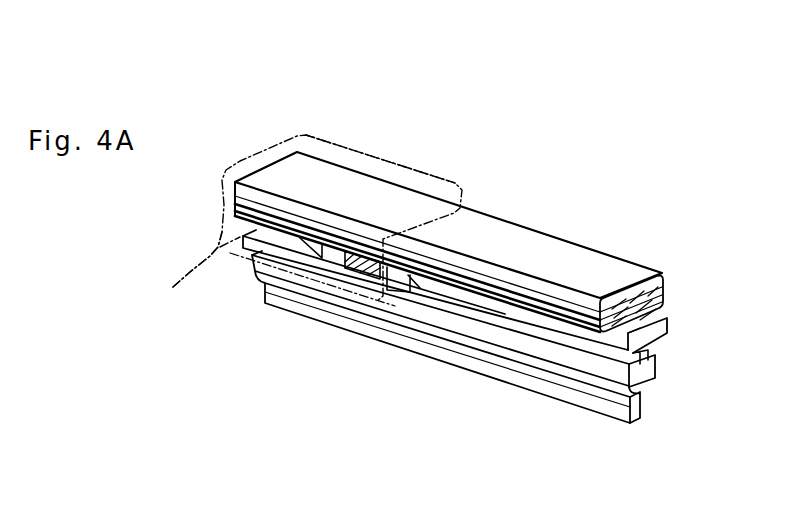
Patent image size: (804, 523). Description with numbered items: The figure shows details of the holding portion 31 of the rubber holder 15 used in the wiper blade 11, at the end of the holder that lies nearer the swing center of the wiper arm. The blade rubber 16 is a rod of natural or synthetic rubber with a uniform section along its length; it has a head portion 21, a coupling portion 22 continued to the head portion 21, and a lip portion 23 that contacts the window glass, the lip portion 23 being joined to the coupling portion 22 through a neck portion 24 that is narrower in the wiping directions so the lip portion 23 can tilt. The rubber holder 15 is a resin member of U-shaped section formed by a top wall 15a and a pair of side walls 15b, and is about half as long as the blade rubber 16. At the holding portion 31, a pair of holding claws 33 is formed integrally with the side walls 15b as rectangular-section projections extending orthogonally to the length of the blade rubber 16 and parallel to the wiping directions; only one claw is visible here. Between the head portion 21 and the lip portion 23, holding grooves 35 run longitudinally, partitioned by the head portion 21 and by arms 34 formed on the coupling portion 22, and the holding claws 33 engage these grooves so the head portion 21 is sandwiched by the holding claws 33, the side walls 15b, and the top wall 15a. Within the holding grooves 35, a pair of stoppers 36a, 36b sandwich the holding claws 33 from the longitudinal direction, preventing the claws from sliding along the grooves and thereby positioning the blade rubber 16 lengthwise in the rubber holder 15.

The wiper blade 11 is at (553, 168).
The rubber holder 15 is at (338, 148).
The top wall 15a is at (390, 192).
The side walls 15b is at (173, 273).
The blade rubber 16 is at (612, 237).
The head portion 21 is at (665, 282).
The coupling portion 22 is at (643, 331).
The lip portion 23 is at (640, 402).
The neck portion 24 is at (652, 362).
The holding portion 31 is at (337, 302).
The holding claws 33 is at (362, 268).
The arms 34 is at (657, 346).
The holding grooves 35 is at (648, 320).
The stopper 36a is at (424, 292).
The stopper 36b is at (318, 263).